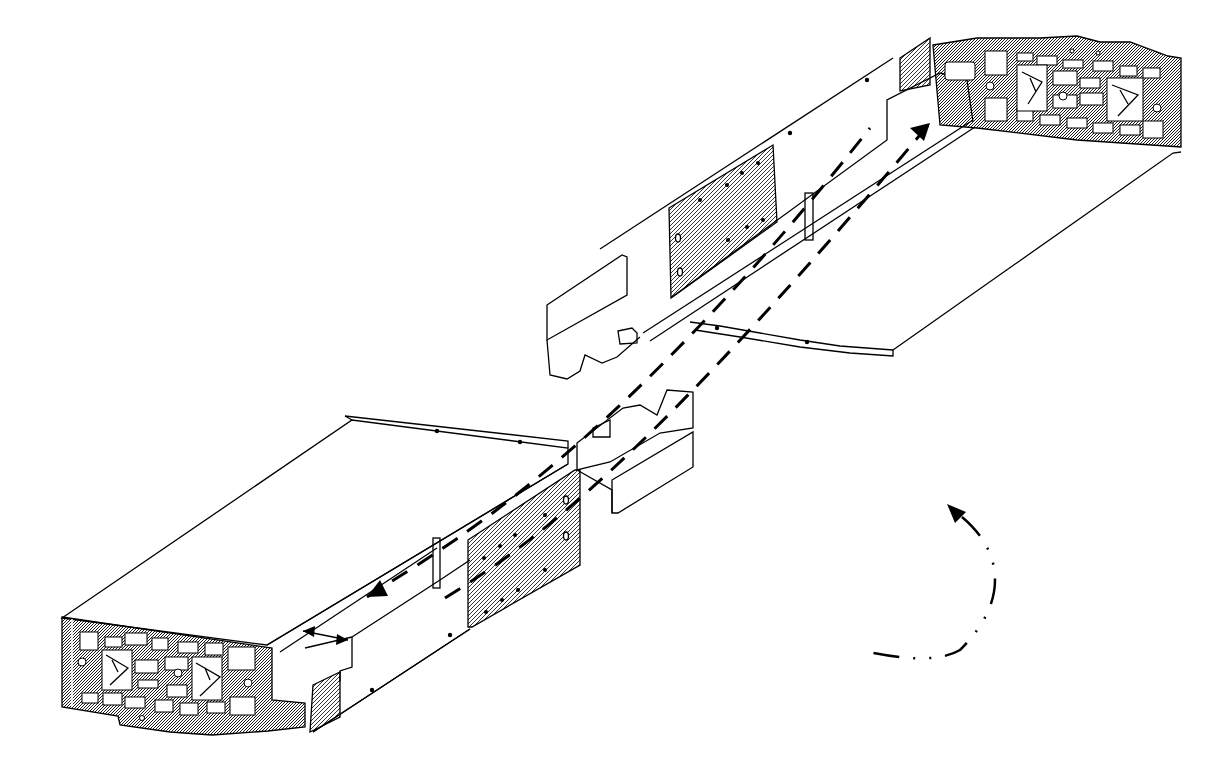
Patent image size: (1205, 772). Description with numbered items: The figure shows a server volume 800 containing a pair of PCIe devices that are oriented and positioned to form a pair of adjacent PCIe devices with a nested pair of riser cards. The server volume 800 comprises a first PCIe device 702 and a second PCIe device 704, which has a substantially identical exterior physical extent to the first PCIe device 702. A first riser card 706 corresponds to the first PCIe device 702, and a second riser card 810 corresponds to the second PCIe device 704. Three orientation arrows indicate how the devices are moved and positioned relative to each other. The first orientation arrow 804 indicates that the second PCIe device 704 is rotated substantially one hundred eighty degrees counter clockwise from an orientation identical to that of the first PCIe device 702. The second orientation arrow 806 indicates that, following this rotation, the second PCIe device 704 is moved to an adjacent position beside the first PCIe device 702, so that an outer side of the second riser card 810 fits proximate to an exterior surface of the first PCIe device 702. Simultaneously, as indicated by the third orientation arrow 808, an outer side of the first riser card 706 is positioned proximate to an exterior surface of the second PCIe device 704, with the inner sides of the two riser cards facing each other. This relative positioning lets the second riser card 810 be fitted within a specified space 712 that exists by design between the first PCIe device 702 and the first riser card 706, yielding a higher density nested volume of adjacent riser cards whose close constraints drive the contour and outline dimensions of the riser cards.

The server volume 800 is at (582, 52).
The first PCIe device 702 is at (321, 575).
The second PCIe device 704 is at (864, 207).
The first riser card 706 is at (391, 680).
The specified space 712 is at (325, 622).
The first orientation arrow 804 is at (957, 581).
The second orientation arrow 806 is at (618, 362).
The third orientation arrow 808 is at (687, 360).
The second riser card 810 is at (758, 184).